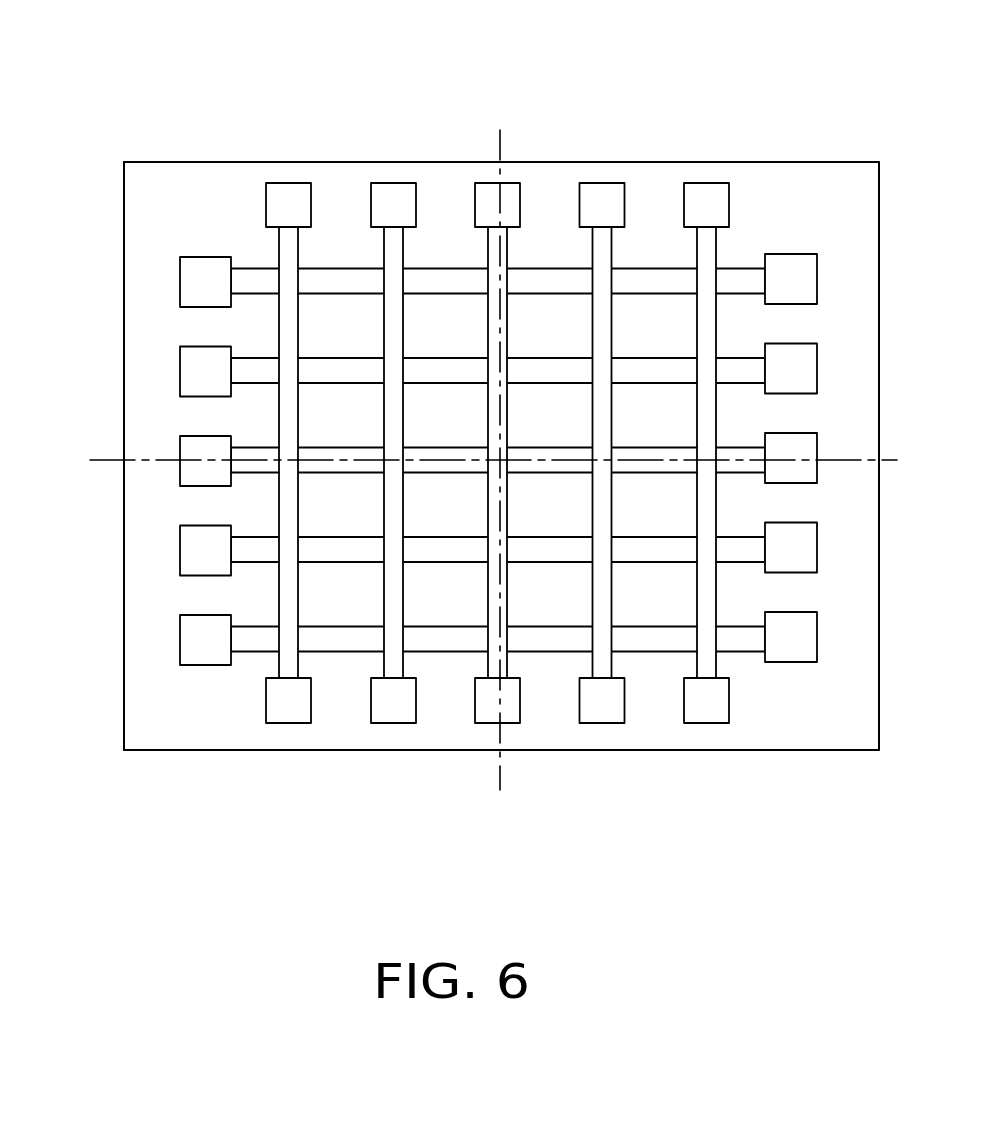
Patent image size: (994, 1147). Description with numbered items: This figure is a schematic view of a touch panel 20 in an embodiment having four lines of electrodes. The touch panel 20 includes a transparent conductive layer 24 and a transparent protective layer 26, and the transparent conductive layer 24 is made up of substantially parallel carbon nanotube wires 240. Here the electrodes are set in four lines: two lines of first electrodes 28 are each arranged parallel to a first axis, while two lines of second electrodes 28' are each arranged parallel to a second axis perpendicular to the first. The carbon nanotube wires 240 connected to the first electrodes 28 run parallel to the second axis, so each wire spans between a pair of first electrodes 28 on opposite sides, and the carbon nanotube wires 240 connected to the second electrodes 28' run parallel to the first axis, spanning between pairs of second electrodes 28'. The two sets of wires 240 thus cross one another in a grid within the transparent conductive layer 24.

The touch panel 20 is at (500, 36).
The transparent conductive layer 24 is at (232, 208).
The transparent protective layer 26 is at (247, 687).
The carbon nanotube wires 240 is at (255, 283).
The first electrodes 28 is at (497, 406).
The second electrodes 28' is at (428, 459).